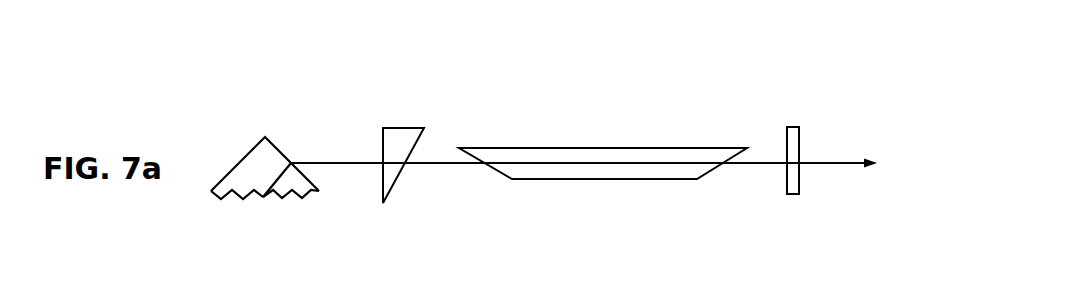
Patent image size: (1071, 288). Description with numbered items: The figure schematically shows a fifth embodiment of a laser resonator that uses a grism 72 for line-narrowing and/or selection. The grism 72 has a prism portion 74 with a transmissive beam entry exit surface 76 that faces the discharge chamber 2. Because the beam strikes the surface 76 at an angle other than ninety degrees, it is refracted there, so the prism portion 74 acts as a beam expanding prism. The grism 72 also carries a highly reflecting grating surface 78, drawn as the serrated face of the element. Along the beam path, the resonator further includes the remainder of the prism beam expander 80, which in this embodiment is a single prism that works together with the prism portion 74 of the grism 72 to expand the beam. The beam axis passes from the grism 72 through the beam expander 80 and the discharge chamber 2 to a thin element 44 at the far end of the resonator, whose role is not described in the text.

The discharge chamber 2 is at (630, 137).
The output coupler / mirror 44 is at (783, 142).
The grism 72 is at (275, 154).
The prism portion 74 is at (239, 181).
The transmissive beam entry exit surface 76 is at (288, 149).
The highly reflecting grating surface 78 is at (278, 201).
The prism beam expander 80 is at (400, 123).